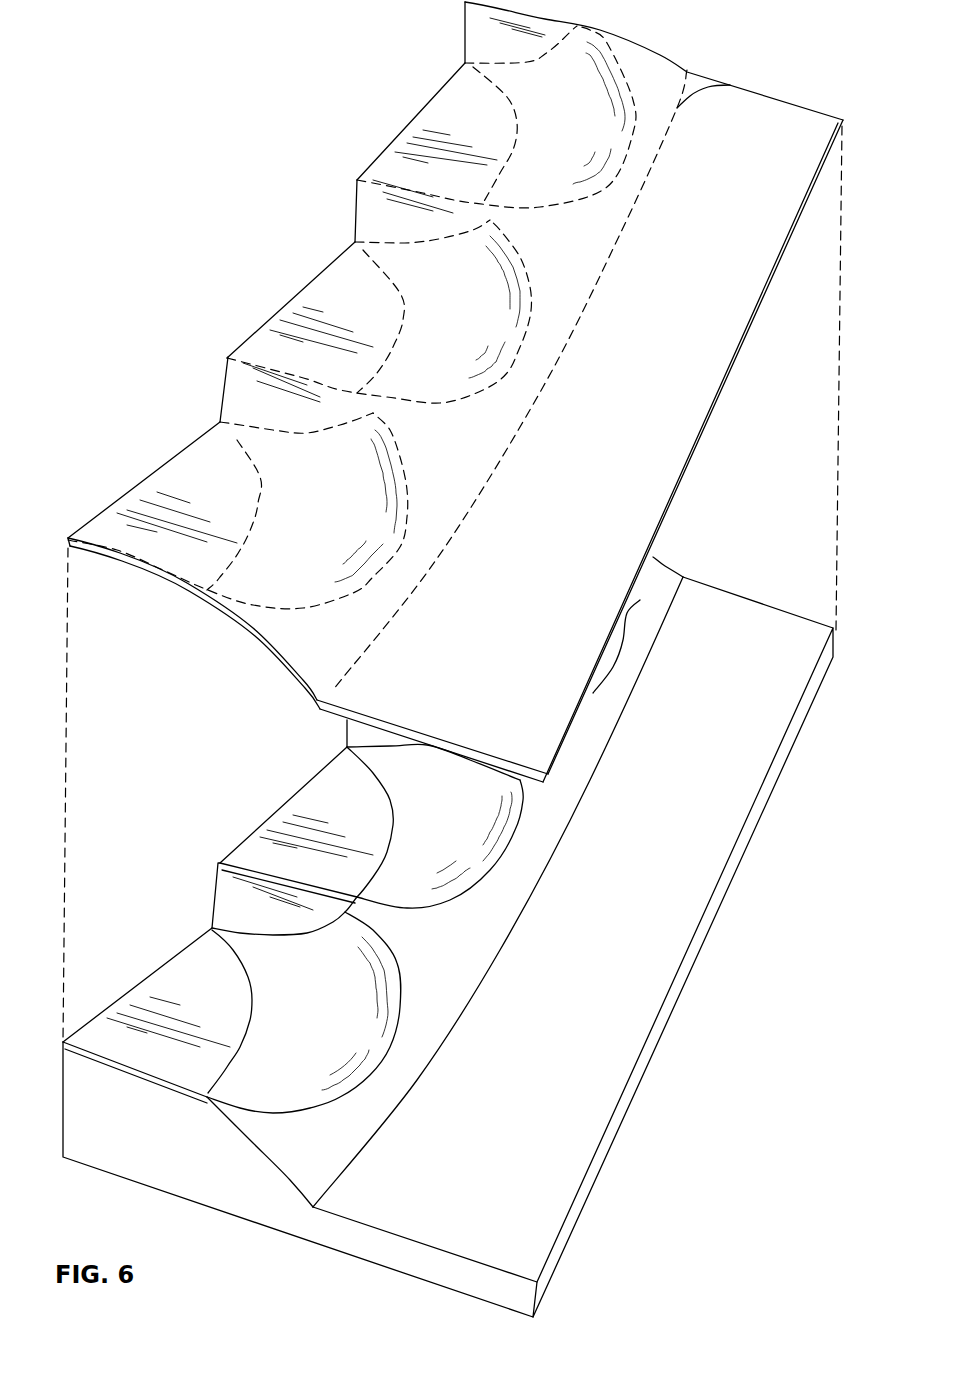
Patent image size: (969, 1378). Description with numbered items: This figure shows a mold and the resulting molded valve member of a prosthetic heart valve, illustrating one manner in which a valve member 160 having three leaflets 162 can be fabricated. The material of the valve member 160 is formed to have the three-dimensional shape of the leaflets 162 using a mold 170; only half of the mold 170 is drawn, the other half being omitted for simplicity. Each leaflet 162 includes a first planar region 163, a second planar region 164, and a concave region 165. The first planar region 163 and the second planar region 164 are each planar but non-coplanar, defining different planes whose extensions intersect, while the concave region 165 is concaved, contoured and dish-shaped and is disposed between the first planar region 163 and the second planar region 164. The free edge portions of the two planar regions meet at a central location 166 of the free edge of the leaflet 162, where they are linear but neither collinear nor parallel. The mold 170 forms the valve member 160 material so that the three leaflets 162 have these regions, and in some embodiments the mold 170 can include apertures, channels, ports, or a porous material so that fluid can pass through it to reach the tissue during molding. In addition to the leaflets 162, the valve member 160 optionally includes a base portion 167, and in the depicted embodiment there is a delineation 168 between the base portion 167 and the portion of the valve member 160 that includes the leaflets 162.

The valve member 160 is at (214, 143).
The leaflet 162 is at (408, 88).
The first planar region 163 is at (487, 130).
The second planar region 164 is at (520, 57).
The concave region 165 is at (573, 143).
The central location 166 is at (465, 63).
The base portion 167 is at (627, 418).
The delineation 168 is at (722, 86).
The mold 170 is at (214, 1225).